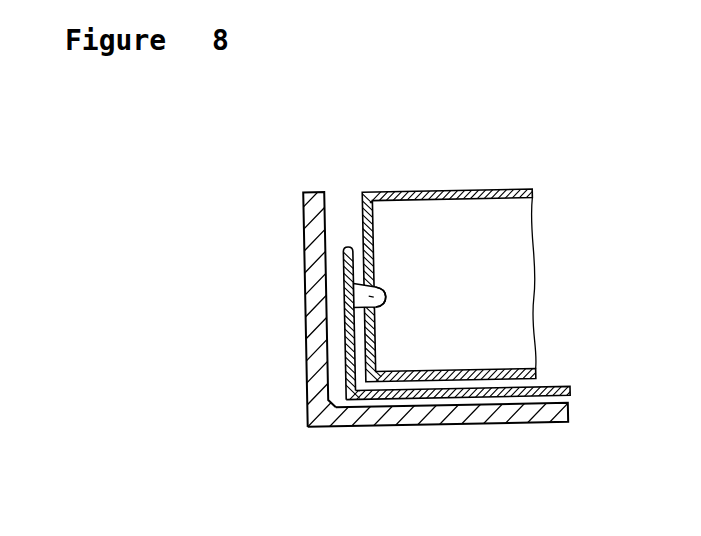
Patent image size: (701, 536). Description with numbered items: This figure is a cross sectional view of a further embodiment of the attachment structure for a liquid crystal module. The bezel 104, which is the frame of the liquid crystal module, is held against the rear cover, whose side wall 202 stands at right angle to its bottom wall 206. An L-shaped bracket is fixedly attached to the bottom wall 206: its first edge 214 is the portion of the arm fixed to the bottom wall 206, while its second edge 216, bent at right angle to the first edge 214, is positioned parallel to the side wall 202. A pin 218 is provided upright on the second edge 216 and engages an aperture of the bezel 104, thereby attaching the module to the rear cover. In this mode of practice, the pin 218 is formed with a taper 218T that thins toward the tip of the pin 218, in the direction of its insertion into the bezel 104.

The bezel 104 is at (441, 189).
The side wall 202 is at (303, 232).
The bottom wall 206 is at (443, 428).
The first edge 214 is at (552, 386).
The second edge 216 is at (337, 245).
The pin 218 is at (384, 300).
The taper 218T is at (378, 287).